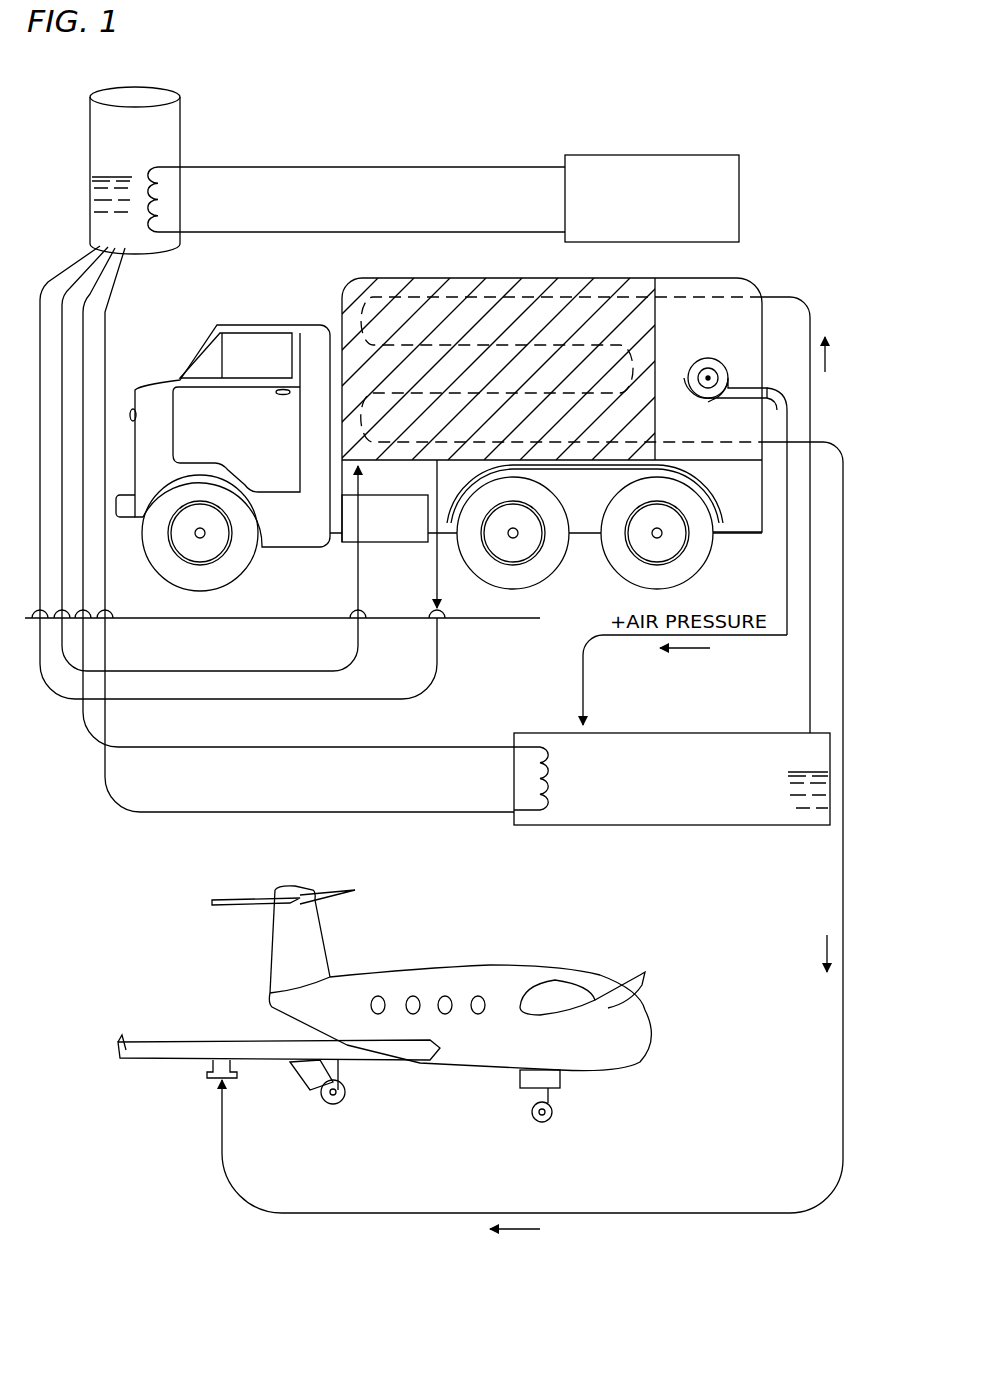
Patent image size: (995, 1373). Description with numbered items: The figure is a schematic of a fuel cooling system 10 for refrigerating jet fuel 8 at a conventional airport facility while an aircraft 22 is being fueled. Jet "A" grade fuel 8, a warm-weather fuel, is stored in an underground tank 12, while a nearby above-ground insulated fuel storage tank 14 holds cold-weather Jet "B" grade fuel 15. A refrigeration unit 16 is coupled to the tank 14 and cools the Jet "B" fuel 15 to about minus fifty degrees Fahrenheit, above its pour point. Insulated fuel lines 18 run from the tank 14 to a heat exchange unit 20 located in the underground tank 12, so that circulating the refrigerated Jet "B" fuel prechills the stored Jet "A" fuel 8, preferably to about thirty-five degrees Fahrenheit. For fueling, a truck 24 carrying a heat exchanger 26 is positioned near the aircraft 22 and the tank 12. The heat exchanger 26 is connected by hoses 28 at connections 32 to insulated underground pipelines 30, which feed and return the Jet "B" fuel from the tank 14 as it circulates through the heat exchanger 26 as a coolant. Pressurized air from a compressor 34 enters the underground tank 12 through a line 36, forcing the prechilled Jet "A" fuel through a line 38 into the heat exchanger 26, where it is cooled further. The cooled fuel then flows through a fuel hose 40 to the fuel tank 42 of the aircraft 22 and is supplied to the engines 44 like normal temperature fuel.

The Jet "A" grade fuel 8 is at (812, 800).
The fuel cooling system 10 is at (575, 150).
The underground tank 12 is at (660, 733).
The insulated fuel storage tank 14 is at (165, 95).
The Jet "B" grade fuel 15 is at (91, 193).
The refrigeration unit 16 is at (740, 187).
The insulated fuel lines 18 is at (105, 364).
The heat exchange unit 20 is at (557, 795).
The aircraft 22 is at (405, 1004).
The truck 24 is at (275, 335).
The heat exchanger 26 is at (440, 280).
The hoses 28 is at (360, 598).
The insulated underground pipelines 30 is at (208, 670).
The connections 32 is at (445, 612).
The compressor 34 is at (700, 362).
The line 36 is at (787, 562).
The line 38 is at (810, 697).
The fuel hose 40 is at (690, 1214).
The fuel tank 42 is at (207, 1052).
The engines 44 is at (270, 1012).